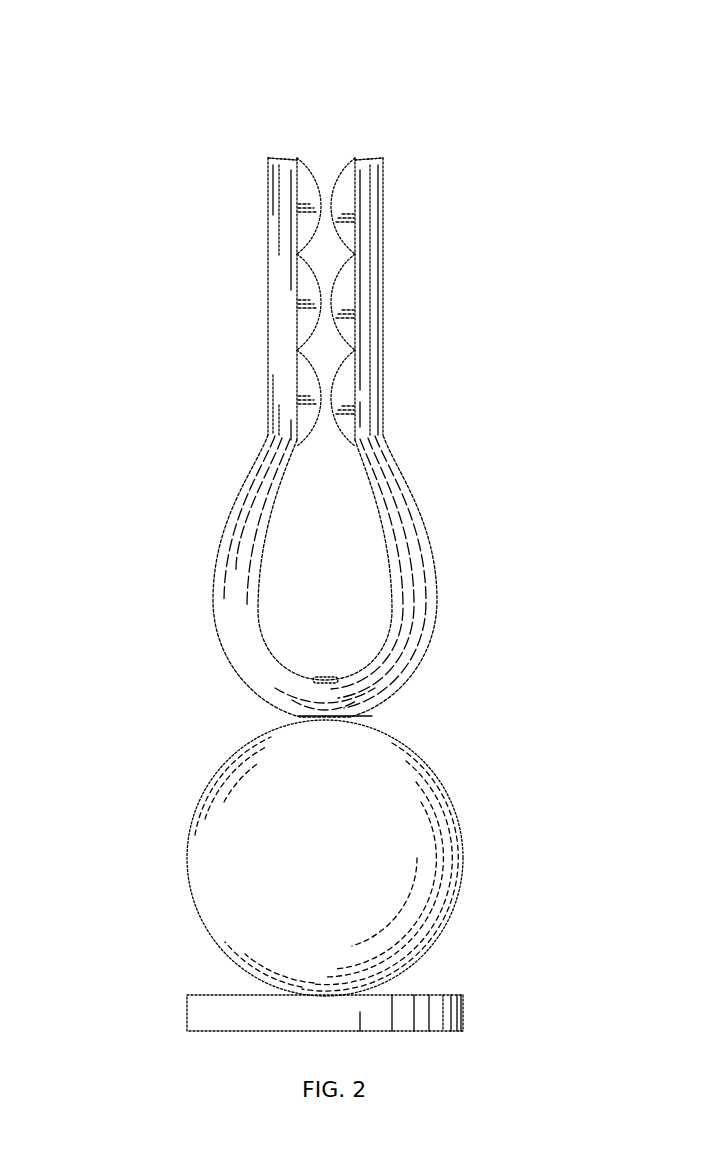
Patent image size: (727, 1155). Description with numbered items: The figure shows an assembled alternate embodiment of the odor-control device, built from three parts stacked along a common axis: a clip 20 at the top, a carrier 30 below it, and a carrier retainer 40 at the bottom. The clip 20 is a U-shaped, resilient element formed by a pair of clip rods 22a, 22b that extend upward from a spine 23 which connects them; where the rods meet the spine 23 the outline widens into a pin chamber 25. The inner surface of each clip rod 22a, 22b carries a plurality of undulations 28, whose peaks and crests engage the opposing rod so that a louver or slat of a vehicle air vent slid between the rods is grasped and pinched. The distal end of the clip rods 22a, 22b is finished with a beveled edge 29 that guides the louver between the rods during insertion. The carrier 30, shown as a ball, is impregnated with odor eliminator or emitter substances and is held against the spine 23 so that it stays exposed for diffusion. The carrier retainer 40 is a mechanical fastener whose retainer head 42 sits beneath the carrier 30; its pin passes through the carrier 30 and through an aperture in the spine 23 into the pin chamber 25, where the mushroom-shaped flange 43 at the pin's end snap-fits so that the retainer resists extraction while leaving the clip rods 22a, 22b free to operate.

The clip 20 is at (499, 184).
The clip rod 22a is at (268, 323).
The clip rod 22b is at (382, 328).
The beveled edge 29 is at (372, 160).
The undulations 28 is at (308, 332).
The pin chamber 25 is at (362, 590).
The flange 43 is at (326, 678).
The spine 23 is at (303, 717).
The carrier 30 is at (515, 780).
The carrier retainer 40 is at (500, 965).
The retainer head 42 is at (225, 1013).